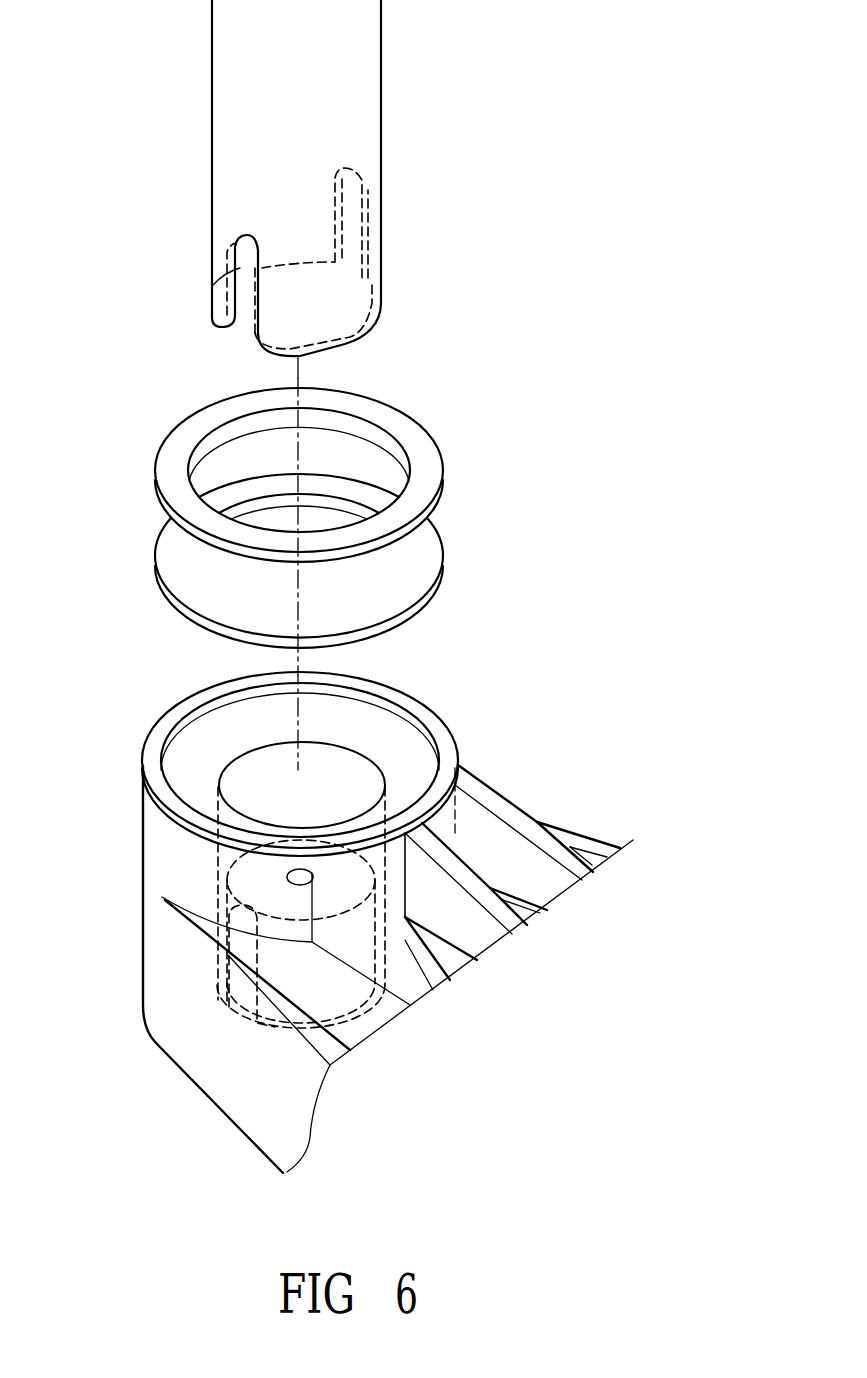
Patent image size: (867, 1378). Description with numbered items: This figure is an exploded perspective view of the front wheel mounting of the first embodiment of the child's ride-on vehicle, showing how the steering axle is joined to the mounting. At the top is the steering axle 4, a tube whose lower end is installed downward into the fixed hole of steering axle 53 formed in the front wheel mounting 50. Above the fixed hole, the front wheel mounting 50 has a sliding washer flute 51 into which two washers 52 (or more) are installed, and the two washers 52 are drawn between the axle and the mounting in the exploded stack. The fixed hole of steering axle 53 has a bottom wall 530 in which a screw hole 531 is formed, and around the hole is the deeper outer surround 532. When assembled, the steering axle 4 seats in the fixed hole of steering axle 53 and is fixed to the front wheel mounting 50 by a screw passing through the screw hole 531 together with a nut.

The steering axle 4 is at (370, 102).
The front wheel mounting 50 is at (217, 1060).
The sliding washer flute 51 is at (213, 742).
The washer 52 is at (427, 460).
The fixed hole of steering axle 53 is at (342, 787).
The bottom wall 530 is at (273, 898).
The screw hole 531 is at (287, 877).
The deeper outer surround 532 is at (388, 876).